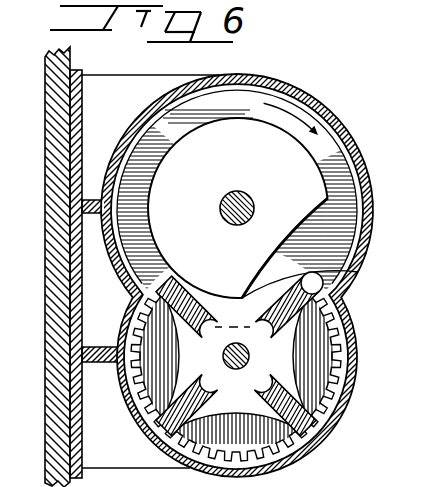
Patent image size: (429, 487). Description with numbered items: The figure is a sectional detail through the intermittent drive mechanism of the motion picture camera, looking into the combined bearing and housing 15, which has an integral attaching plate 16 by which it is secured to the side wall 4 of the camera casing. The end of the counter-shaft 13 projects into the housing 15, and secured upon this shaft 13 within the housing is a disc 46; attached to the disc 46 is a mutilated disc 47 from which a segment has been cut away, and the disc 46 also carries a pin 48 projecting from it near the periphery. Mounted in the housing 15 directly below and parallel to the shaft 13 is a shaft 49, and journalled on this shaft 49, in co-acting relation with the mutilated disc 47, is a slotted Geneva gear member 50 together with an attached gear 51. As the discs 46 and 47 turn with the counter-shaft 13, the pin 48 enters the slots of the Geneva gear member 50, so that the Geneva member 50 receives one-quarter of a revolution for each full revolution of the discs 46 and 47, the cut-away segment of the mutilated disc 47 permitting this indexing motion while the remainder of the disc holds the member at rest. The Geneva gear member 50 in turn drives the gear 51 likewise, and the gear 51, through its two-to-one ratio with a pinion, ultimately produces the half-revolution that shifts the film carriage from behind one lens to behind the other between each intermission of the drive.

The side wall 4 is at (56, 113).
The attaching plate 16 is at (82, 128).
The combined bearing and housing 15 is at (366, 203).
The mutilated disc 47 is at (237, 200).
The counter-shaft 13 is at (255, 207).
The disc 46 is at (340, 239).
The pin 48 is at (340, 276).
The shaft 49 is at (223, 355).
The slotted Geneva gear member 50 is at (237, 357).
The gear 51 is at (332, 362).